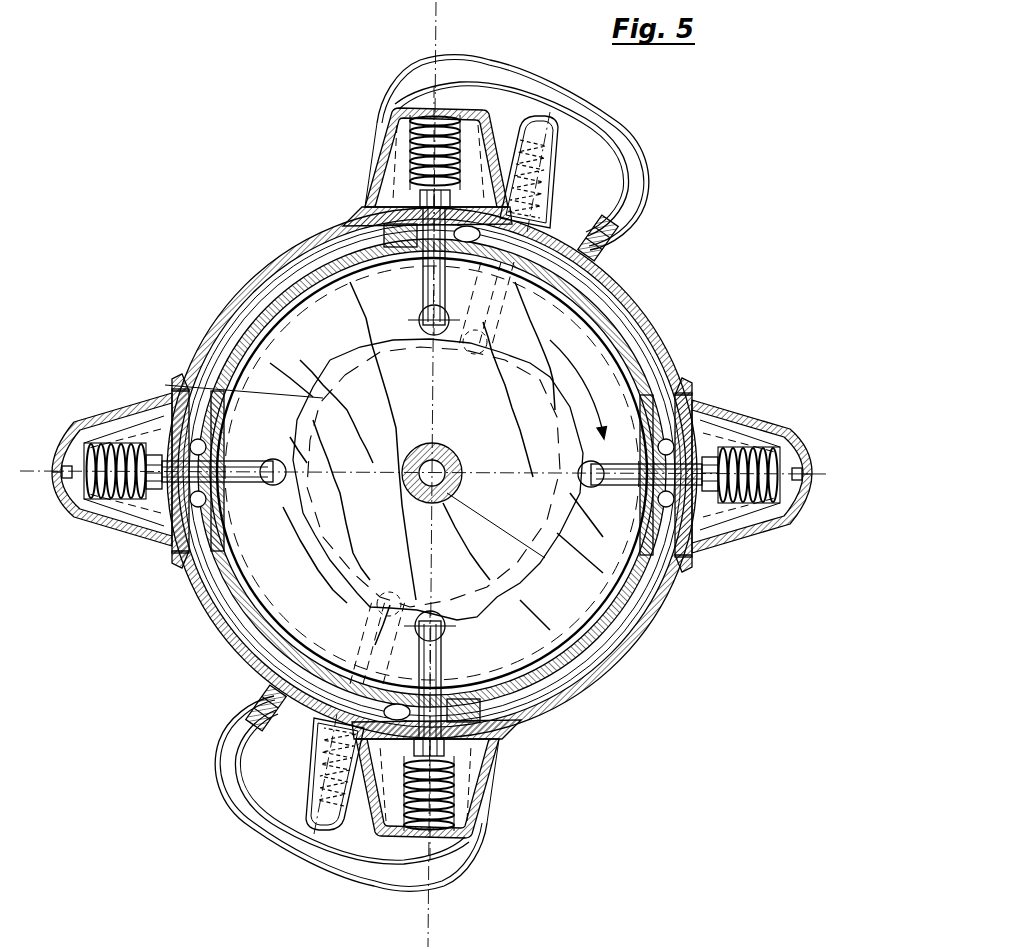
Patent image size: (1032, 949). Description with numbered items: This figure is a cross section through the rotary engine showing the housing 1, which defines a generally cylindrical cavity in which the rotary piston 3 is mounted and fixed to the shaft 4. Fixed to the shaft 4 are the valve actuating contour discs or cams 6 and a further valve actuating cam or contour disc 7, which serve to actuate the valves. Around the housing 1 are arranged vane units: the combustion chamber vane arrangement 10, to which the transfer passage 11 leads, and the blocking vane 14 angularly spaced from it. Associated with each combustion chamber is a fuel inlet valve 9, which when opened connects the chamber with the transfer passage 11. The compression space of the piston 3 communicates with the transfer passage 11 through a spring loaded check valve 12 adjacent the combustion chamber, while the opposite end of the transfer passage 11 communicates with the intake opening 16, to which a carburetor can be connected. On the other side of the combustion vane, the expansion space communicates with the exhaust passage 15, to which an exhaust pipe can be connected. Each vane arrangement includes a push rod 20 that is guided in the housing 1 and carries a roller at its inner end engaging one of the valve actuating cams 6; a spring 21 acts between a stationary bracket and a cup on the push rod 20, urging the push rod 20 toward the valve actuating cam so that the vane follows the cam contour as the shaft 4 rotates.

The housing 1 is at (250, 292).
The rotary piston 3 is at (543, 600).
The shaft 4 is at (610, 613).
The valve actuating contour disc 6 is at (237, 330).
The valve actuating cam 7 is at (322, 368).
The fuel inlet valve 9 is at (527, 229).
The combustion chamber vane arrangement 10 is at (393, 110).
The transfer passage 11 is at (652, 195).
The spring loaded check valve 12 is at (369, 221).
The blocking vane 14 is at (114, 410).
The exhaust passage 15 is at (690, 392).
The intake opening 16 is at (690, 560).
The push rod 20 is at (377, 265).
The spring 21 is at (127, 497).